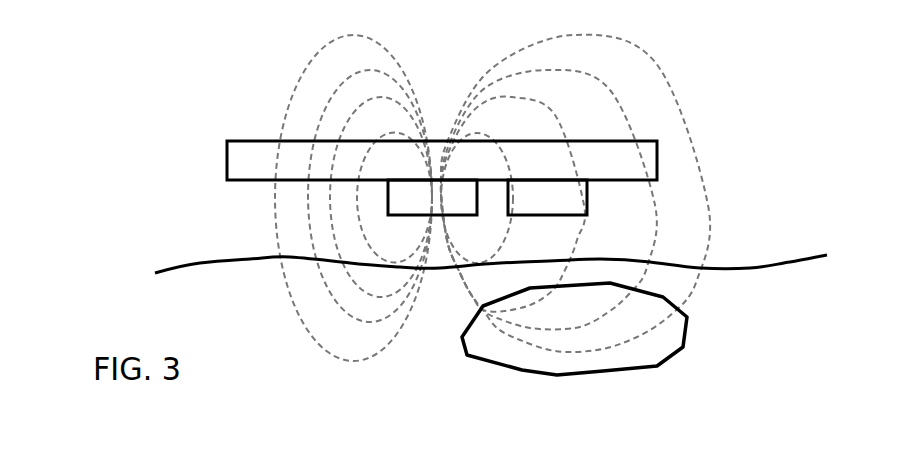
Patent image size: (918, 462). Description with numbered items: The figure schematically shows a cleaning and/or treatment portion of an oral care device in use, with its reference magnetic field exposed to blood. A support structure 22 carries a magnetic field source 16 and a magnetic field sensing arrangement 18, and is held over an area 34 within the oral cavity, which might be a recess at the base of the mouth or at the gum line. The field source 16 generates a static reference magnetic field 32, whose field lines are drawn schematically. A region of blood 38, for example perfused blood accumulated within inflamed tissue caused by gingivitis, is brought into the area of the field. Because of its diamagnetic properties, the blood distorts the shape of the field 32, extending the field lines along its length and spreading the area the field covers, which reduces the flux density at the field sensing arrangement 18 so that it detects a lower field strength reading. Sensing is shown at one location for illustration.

The magnetic field source 16 is at (432, 197).
The magnetic field sensing arrangement 18 is at (547, 197).
The support structure 22 is at (653, 163).
The reference magnetic field 32 is at (699, 83).
The area within the oral cavity 34 is at (790, 253).
The region of blood 38 is at (690, 343).